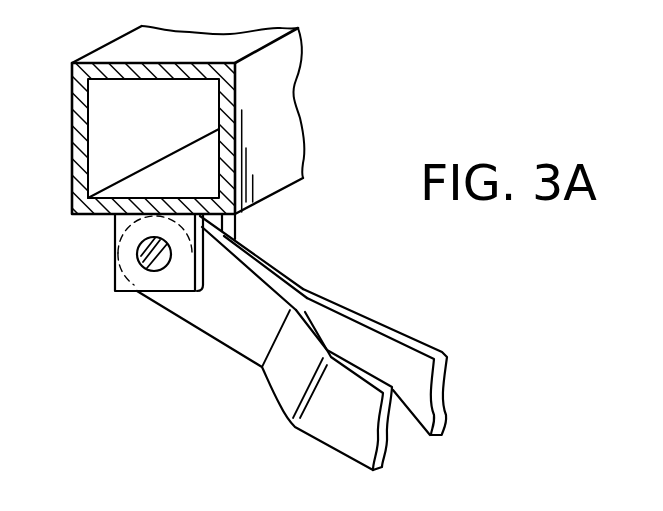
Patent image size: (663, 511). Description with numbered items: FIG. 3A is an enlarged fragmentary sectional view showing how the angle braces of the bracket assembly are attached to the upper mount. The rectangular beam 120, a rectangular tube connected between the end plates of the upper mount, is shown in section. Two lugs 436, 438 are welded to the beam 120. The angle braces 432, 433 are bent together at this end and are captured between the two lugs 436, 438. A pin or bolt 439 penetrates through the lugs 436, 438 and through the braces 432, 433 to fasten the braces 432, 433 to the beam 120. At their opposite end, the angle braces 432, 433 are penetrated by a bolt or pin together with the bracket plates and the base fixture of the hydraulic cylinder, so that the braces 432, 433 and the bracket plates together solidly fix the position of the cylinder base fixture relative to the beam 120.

The rectangular beam 120 is at (277, 117).
The lug 436 is at (114, 235).
The pin or bolt 439 is at (141, 265).
The lug 438 is at (237, 228).
The angle brace 433 is at (378, 320).
The angle brace 432 is at (270, 395).